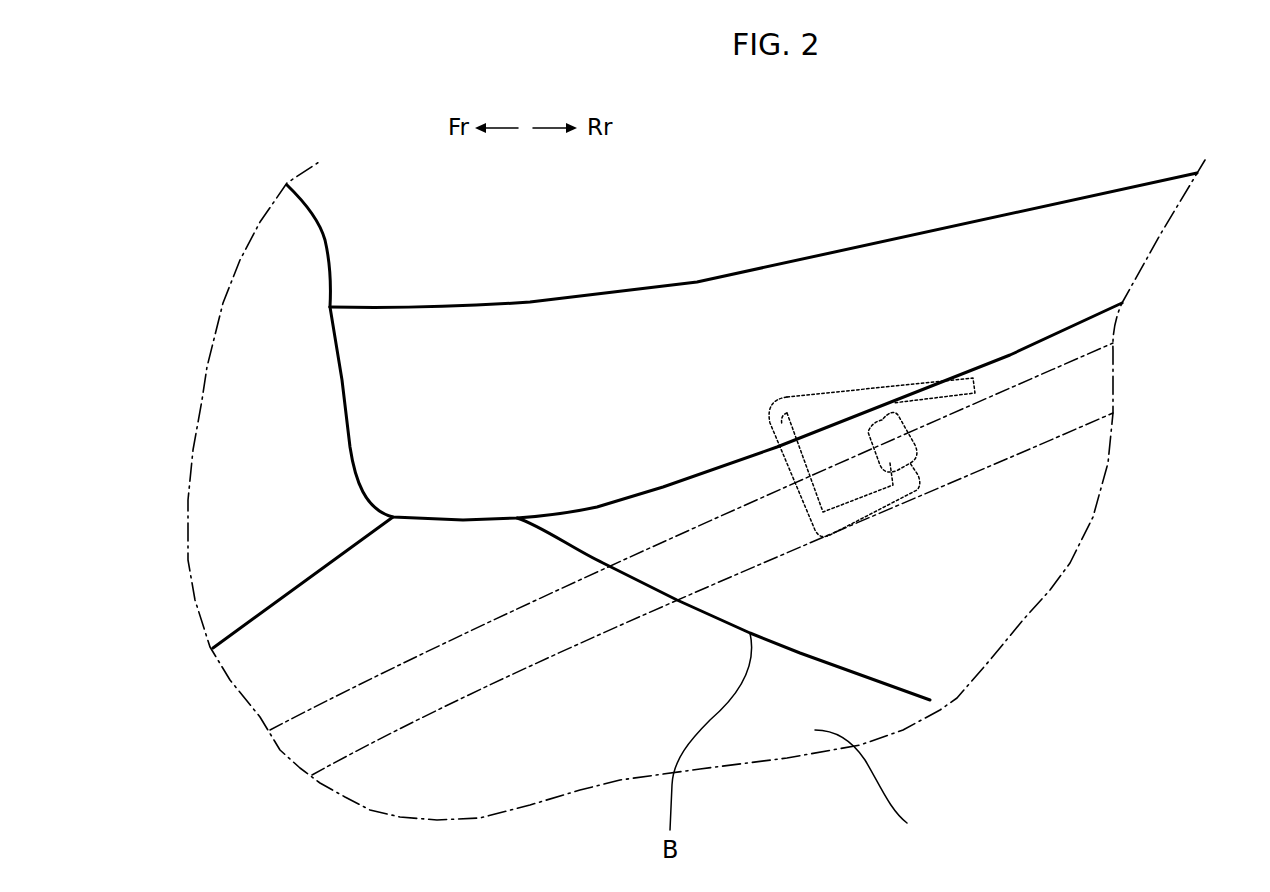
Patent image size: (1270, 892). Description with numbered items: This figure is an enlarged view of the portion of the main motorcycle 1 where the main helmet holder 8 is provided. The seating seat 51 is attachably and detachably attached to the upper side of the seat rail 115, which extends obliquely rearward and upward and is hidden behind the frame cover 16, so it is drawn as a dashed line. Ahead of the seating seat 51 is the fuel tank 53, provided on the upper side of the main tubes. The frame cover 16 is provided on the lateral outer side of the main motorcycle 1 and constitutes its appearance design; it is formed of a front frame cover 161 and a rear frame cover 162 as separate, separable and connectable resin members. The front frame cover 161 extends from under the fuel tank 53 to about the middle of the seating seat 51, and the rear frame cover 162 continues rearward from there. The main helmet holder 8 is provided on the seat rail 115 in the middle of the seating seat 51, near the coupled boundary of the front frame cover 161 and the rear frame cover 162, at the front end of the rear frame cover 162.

The main motorcycle 1 is at (1104, 776).
The main helmet holder 8 is at (832, 368).
The frame cover 16 is at (957, 768).
The seating seat 51 is at (618, 290).
The fuel tank 53 is at (310, 283).
The seat rail 115 is at (1095, 387).
The front frame cover 161 is at (884, 782).
The rear frame cover 162 is at (888, 667).